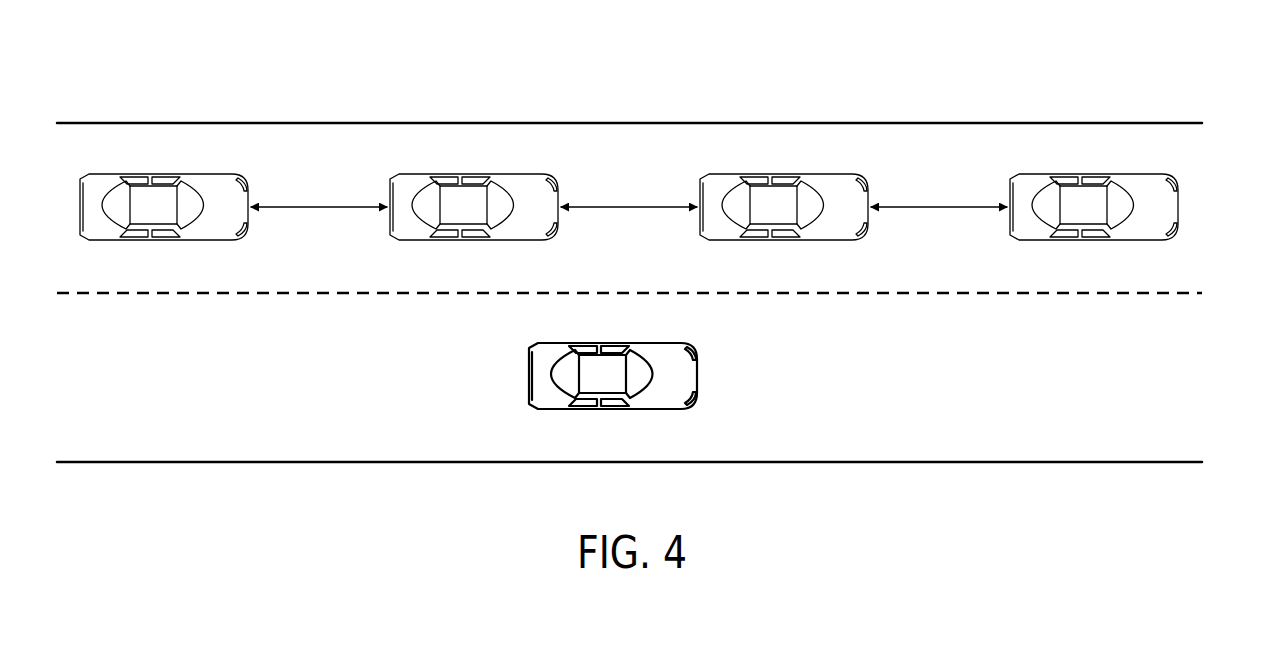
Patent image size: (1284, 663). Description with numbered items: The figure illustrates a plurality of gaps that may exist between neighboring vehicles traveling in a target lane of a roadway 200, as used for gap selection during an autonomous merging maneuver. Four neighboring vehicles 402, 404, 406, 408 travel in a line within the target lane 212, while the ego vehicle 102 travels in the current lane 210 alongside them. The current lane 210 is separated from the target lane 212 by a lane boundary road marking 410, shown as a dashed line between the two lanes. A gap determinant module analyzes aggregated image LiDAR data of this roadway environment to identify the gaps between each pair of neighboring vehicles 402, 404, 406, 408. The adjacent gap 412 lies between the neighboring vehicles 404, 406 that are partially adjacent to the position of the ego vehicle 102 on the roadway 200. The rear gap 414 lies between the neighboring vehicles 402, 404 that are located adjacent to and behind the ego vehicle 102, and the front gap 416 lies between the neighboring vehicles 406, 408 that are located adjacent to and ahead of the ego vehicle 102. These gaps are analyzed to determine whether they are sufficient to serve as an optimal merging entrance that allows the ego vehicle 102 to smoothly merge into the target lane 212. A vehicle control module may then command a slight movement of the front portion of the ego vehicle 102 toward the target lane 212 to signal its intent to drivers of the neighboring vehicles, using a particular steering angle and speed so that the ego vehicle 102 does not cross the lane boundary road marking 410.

The roadway 200 is at (669, 241).
The target lane 212 is at (1167, 148).
The current lane 210 is at (1160, 365).
The lane boundary road marking 410 is at (745, 297).
The ego vehicle 102 is at (620, 411).
The neighboring vehicle 402 is at (170, 242).
The neighboring vehicle 404 is at (480, 242).
The neighboring vehicle 406 is at (790, 242).
The neighboring vehicle 408 is at (1100, 242).
The adjacent gap 412 is at (625, 145).
The rear gap 414 is at (305, 145).
The front gap 416 is at (912, 147).